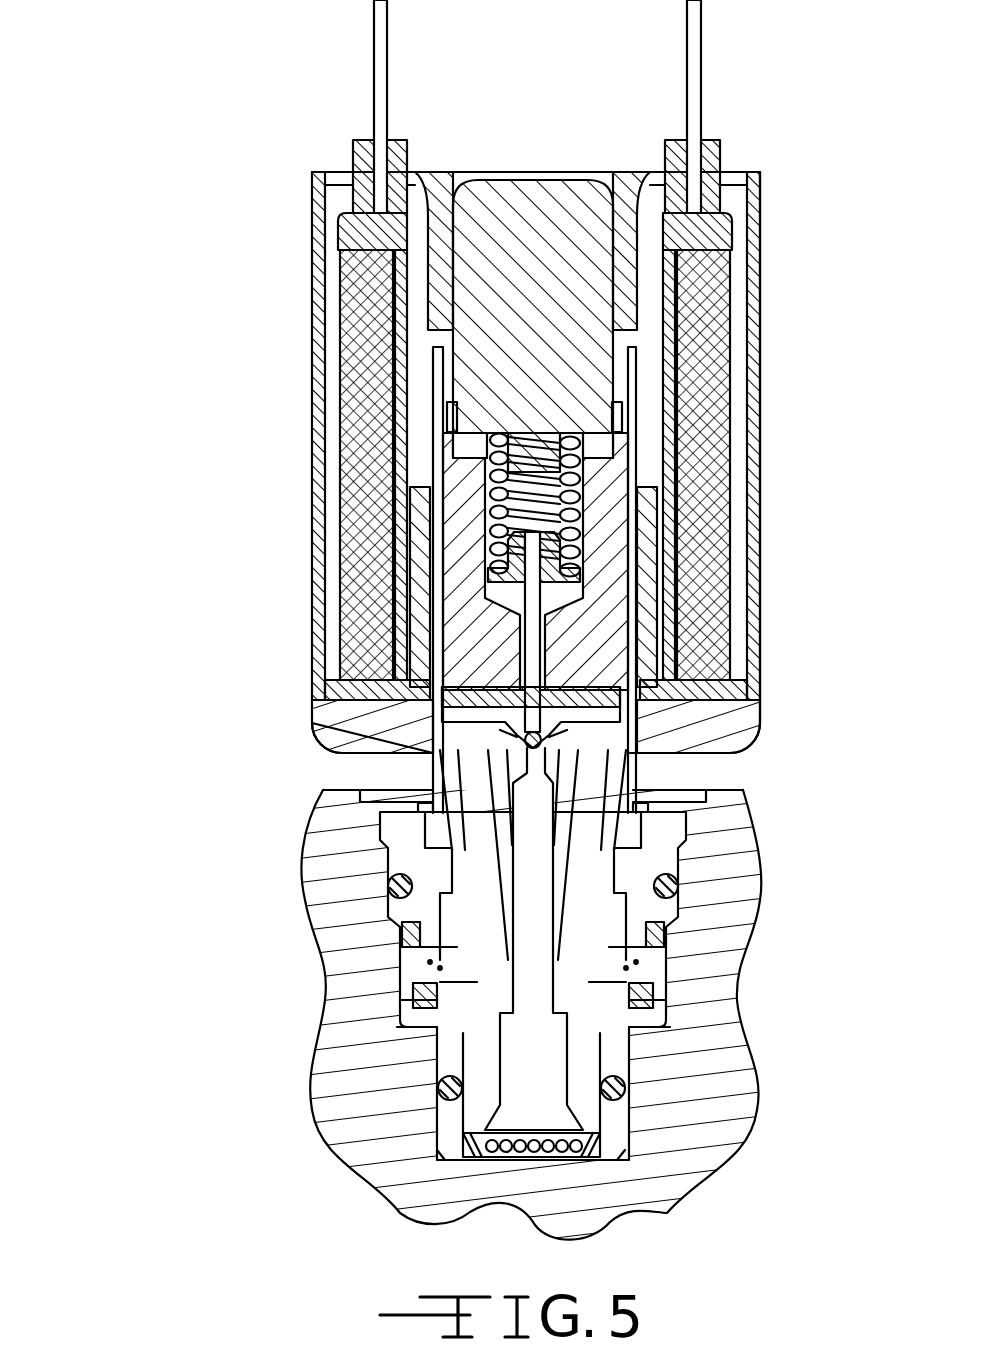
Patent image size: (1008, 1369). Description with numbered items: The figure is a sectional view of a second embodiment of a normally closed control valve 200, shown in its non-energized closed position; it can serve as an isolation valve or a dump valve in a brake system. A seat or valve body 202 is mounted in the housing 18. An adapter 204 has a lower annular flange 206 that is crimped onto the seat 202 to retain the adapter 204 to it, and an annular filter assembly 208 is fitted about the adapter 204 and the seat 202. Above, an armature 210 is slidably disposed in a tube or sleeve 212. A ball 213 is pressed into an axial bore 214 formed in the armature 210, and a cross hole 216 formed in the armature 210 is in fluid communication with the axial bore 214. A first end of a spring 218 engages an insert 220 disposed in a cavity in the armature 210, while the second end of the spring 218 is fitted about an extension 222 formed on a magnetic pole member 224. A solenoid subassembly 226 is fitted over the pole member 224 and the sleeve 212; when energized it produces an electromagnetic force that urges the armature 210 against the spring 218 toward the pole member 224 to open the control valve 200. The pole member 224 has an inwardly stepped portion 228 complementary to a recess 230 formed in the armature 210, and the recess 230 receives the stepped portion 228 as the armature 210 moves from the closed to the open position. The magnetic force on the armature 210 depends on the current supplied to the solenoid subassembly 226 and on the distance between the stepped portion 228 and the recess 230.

The housing 18 is at (760, 863).
The control valve 200 is at (135, 162).
The seat 202 is at (600, 1027).
The adapter 204 is at (408, 827).
The lower annular flange 206 is at (648, 950).
The annular filter assembly 208 is at (413, 998).
The armature 210 is at (460, 637).
The sleeve 212 is at (440, 400).
The ball 213 is at (545, 735).
The axial bore 214 is at (532, 667).
The cross hole 216 is at (593, 704).
The spring 218 is at (577, 482).
The insert 220 is at (558, 588).
The extension 222 is at (538, 447).
The magnetic pole member 224 is at (535, 205).
The solenoid subassembly 226 is at (762, 268).
The inwardly stepped portion 228 is at (452, 415).
The recess 230 is at (440, 487).